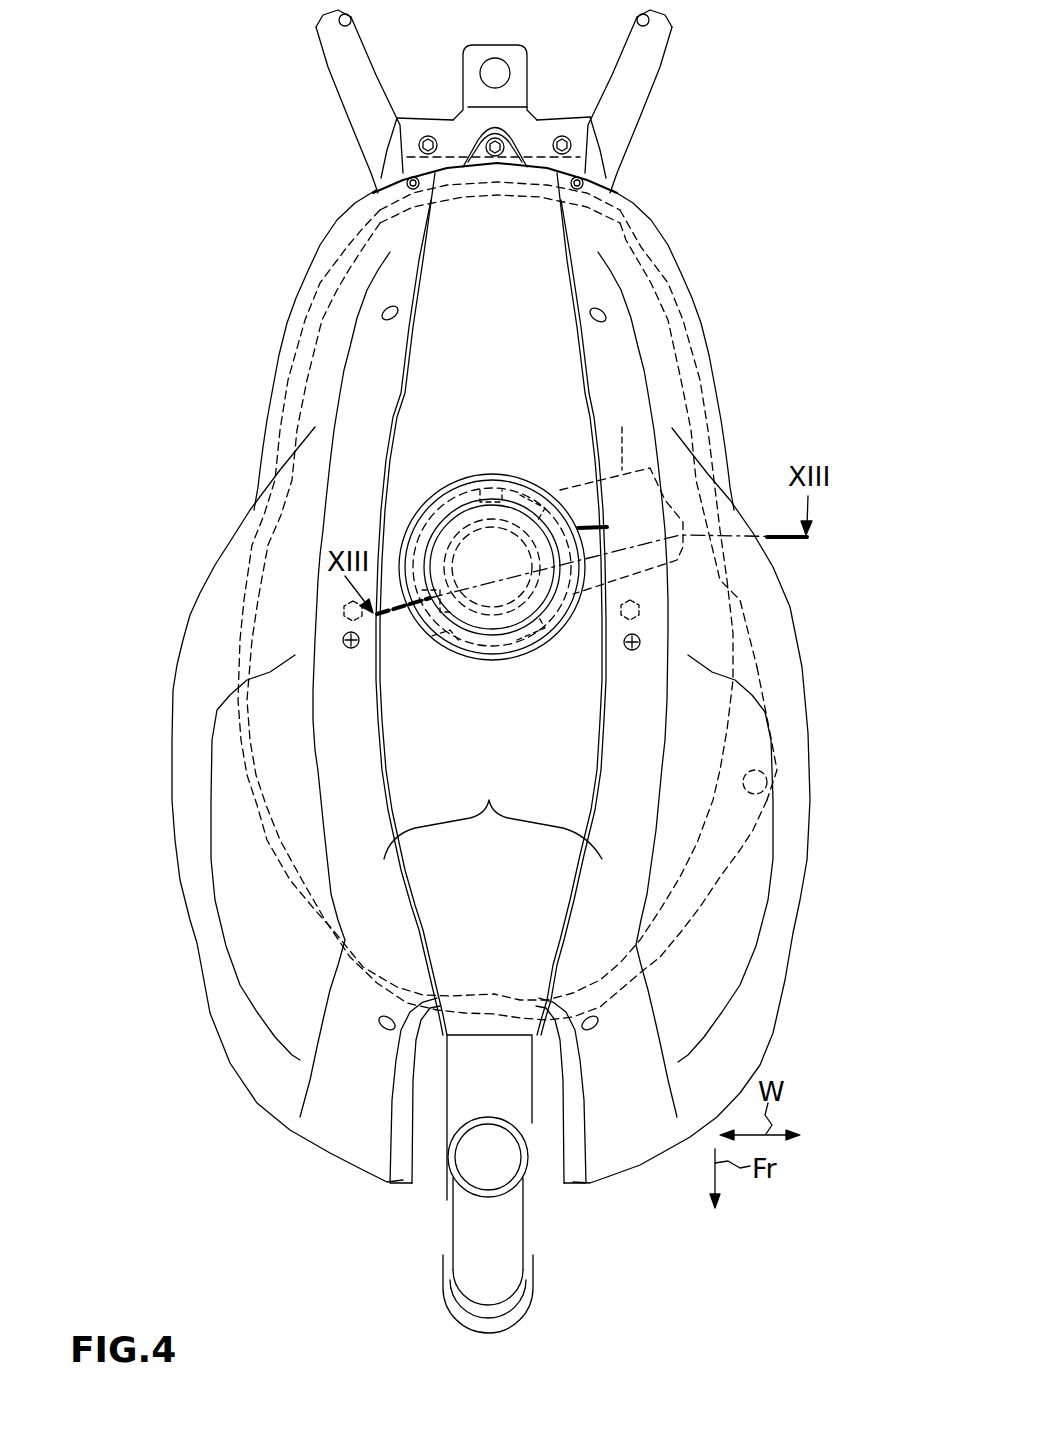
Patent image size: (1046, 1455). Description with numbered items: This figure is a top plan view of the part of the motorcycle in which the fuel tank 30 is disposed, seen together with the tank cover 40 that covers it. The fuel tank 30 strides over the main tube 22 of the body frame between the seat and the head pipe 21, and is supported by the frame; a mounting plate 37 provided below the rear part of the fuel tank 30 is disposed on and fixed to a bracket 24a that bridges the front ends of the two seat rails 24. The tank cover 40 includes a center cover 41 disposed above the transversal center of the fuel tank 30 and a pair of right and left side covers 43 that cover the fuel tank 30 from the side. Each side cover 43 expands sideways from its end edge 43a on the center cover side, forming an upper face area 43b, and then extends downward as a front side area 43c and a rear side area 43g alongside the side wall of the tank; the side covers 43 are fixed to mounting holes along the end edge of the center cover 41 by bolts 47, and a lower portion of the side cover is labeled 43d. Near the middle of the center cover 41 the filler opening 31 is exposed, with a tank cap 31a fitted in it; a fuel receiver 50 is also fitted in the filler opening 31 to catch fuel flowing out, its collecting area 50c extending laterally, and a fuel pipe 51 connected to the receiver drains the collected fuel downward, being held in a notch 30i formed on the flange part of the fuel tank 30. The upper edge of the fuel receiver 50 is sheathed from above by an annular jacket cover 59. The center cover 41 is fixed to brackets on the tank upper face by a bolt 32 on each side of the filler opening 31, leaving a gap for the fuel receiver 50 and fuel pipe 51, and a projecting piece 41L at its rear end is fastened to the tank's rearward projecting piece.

The head pipe 21 is at (512, 1225).
The main tube 22 is at (468, 1135).
The seat rails 24 is at (496, 101).
The bracket 24a is at (527, 80).
The fuel tank 30 is at (502, 573).
The notch 30i is at (812, 787).
The filler opening 31 is at (492, 523).
The tank cap 31a is at (492, 593).
The bolt 32 is at (493, 610).
The mounting plate 37 is at (453, 147).
The tank cover 40 is at (550, 182).
The center cover 41 is at (557, 604).
The projecting piece 41L is at (461, 104).
The side cover 43 is at (489, 684).
The end edge 43a is at (532, 617).
The upper face area 43b is at (493, 810).
The front side area 43c is at (492, 805).
The cover leg 43d is at (472, 1109).
The rear side area 43g is at (501, 350).
The bolts 47 is at (494, 587).
The fuel receiver 50 is at (611, 495).
The collecting area 50c is at (636, 434).
The fuel pipe 51 is at (815, 725).
The jacket cover 59 is at (510, 524).